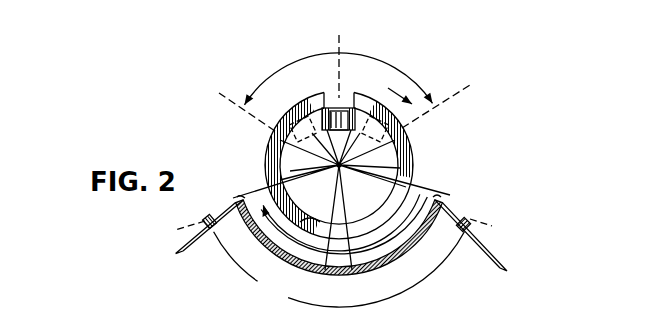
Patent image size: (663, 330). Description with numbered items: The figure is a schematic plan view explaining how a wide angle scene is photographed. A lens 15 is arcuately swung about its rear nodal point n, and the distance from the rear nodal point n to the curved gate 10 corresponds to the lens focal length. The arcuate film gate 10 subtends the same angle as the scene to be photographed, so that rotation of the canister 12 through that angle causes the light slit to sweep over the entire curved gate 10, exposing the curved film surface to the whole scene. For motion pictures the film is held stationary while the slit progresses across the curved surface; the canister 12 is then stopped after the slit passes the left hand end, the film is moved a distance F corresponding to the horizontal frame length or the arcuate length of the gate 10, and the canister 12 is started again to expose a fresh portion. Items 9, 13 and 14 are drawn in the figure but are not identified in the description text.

The swing arc of cradle 9 is at (339, 269).
The curved gate 10 is at (394, 264).
The canister 12 is at (403, 146).
The pole block 13 is at (341, 116).
The bearing 14 is at (336, 234).
The lens 15 is at (338, 117).
The rear nodal point n is at (298, 172).
The film advance distance F is at (338, 217).